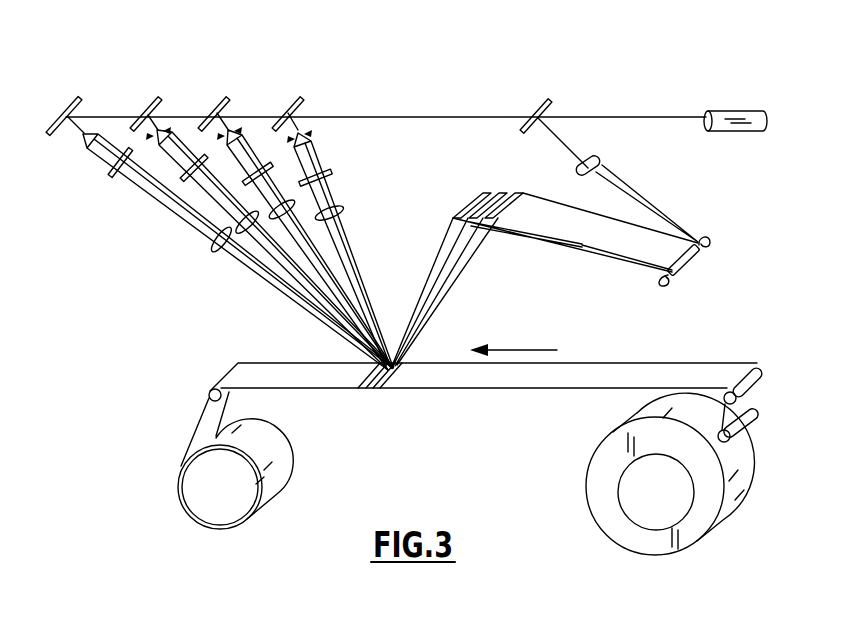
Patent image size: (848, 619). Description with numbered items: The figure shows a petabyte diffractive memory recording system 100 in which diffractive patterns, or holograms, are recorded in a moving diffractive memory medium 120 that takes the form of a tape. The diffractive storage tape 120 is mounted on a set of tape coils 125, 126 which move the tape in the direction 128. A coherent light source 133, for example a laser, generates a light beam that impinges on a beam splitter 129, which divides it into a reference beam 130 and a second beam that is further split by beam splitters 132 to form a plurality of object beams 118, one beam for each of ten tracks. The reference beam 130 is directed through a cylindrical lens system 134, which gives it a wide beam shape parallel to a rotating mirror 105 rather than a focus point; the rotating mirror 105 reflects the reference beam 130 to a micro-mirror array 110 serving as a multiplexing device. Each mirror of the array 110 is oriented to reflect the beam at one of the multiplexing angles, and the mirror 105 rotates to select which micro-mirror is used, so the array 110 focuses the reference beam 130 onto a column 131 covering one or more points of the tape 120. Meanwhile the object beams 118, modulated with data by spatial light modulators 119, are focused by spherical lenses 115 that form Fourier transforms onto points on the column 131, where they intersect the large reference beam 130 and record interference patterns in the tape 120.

The petabyte diffractive memory recording system 100 is at (98, 390).
The rotating mirror 105 is at (708, 246).
The micro-mirror array 110 is at (466, 200).
The spherical lenses 115 is at (344, 208).
The object beams 118 is at (316, 148).
The spatial light modulators 119 is at (93, 184).
The diffractive memory medium 120 is at (567, 388).
The tape coil 125 is at (206, 525).
The tape coil 126 is at (653, 546).
The direction 128 is at (522, 346).
The beam splitter 129 is at (545, 100).
The reference beam 130 is at (563, 137).
The column 131 is at (385, 388).
The beam splitters 132 is at (297, 100).
The coherent light source 133 is at (757, 110).
The cylindrical lens system 134 is at (577, 173).